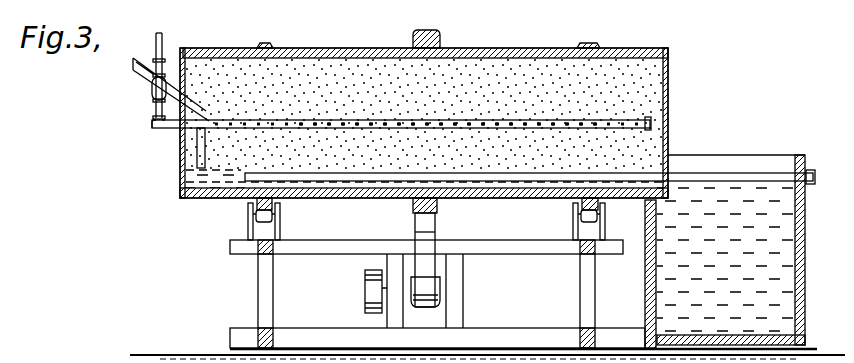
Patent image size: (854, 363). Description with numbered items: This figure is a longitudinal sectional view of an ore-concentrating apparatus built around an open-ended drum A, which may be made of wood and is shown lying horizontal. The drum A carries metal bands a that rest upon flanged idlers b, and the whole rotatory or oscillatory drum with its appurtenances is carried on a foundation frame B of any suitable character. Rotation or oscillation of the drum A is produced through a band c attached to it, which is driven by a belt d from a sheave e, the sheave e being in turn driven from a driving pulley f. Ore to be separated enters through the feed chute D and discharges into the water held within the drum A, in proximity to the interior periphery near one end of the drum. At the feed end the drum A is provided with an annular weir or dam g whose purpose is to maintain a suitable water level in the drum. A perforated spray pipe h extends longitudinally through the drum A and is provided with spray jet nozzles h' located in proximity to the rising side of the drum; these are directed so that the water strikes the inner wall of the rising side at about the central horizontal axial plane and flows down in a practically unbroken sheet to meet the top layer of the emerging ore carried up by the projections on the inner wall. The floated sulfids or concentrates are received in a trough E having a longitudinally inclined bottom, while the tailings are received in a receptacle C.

The drum A is at (424, 109).
The metal bands a is at (266, 45).
The band c is at (443, 33).
The perforated spray pipe h is at (401, 112).
The nozzles h' is at (450, 107).
The feed chute D is at (207, 152).
The trough E is at (494, 163).
The annular weir g is at (181, 176).
The receptacle C is at (800, 240).
The foundation frame B is at (256, 318).
The flanged idlers b is at (250, 216).
The belt d is at (418, 223).
The sheave e is at (440, 283).
The driving pulley f is at (365, 287).